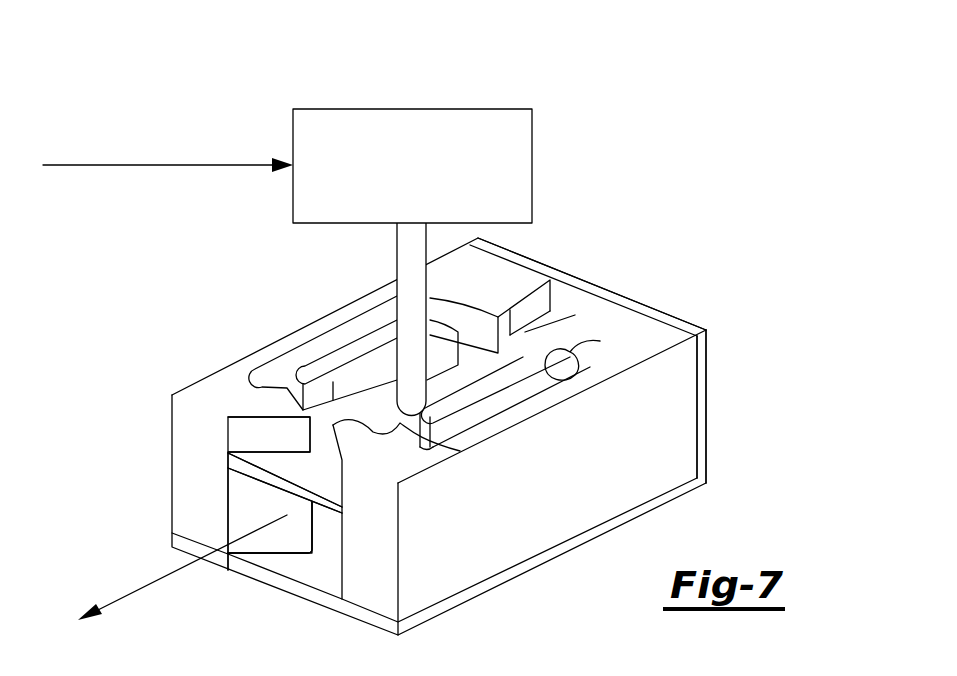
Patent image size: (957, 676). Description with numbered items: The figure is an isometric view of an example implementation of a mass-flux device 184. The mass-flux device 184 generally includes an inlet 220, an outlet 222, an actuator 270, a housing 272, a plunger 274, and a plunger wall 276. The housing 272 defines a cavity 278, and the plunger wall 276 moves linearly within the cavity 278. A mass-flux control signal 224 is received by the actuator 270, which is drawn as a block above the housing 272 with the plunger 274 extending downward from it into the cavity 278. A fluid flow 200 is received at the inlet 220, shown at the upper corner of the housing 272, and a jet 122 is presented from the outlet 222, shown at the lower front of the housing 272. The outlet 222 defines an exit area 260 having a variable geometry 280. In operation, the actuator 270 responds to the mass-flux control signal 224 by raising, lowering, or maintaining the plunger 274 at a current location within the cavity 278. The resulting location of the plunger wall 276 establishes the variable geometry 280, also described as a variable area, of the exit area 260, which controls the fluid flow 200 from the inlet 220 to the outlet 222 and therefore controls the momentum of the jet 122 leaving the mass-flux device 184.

The jet 122 is at (132, 592).
The mass-flux device 184 is at (248, 70).
The fluid flow 200 is at (690, 314).
The inlet 220 is at (674, 303).
The outlet 222 is at (305, 567).
The mass-flux control signal 224 is at (133, 163).
The exit area 260 is at (270, 527).
The actuator 270 is at (447, 108).
The housing 272 is at (680, 452).
The plunger 274 is at (397, 252).
The plunger wall 276 is at (258, 472).
The cavity 278 is at (600, 341).
The variable geometry 280 is at (285, 483).